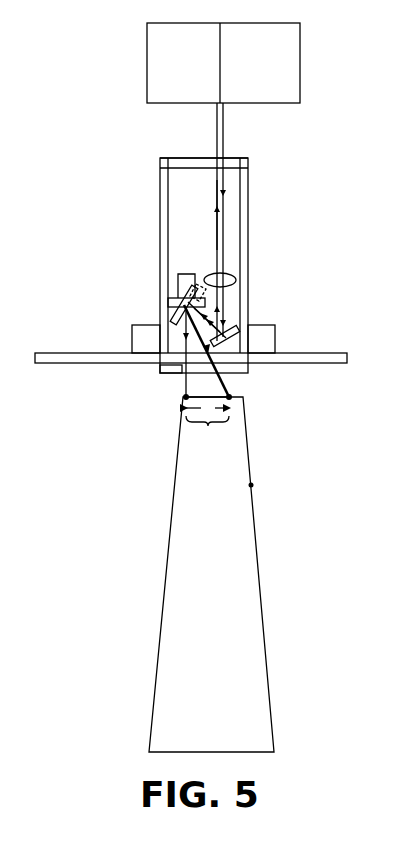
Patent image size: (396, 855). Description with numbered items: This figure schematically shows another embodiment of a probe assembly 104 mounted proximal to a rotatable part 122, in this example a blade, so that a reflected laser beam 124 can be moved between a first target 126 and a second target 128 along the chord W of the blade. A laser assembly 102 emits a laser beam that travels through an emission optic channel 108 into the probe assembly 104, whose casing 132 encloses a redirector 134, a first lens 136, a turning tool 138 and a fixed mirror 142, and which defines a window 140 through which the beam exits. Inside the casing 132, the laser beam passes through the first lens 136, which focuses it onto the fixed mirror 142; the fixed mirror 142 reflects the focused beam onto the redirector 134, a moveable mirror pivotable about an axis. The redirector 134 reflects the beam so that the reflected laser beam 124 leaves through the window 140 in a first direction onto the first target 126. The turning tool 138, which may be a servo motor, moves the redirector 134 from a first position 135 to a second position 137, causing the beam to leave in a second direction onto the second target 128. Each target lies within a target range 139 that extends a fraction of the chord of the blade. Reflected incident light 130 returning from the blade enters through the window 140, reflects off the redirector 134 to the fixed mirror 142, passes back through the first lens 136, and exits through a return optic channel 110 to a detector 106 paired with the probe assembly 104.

The laser assembly 102 is at (300, 68).
The probe assembly 104 is at (157, 194).
The detector 106 is at (147, 77).
The emission optic channel 108 is at (223, 135).
The return optic channel 110 is at (217, 122).
The rotatable part 122 is at (266, 655).
The reflected laser beam 124 is at (195, 374).
The first target 126 is at (246, 401).
The second target 128 is at (182, 392).
The reflected incident light 130 is at (217, 228).
The casing 132 is at (248, 158).
The redirector 134 is at (170, 297).
The first position 135 is at (170, 306).
The first lens 136 is at (236, 280).
The second position 137 is at (203, 284).
The turning tool 138 is at (178, 295).
The target range 139 is at (208, 426).
The window 140 is at (180, 367).
The fixed mirror 142 is at (238, 340).